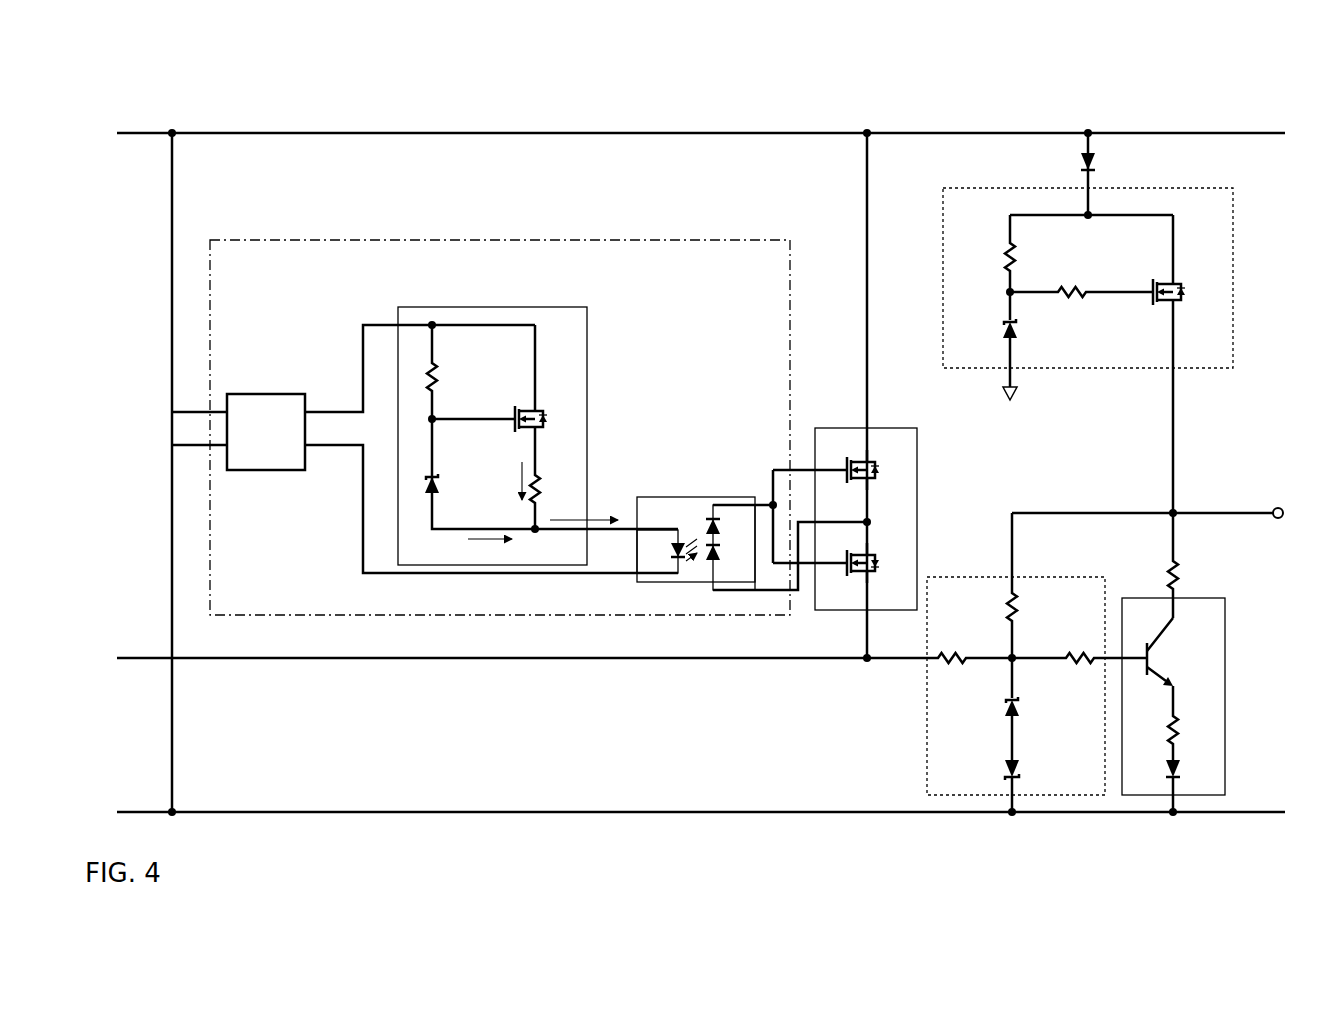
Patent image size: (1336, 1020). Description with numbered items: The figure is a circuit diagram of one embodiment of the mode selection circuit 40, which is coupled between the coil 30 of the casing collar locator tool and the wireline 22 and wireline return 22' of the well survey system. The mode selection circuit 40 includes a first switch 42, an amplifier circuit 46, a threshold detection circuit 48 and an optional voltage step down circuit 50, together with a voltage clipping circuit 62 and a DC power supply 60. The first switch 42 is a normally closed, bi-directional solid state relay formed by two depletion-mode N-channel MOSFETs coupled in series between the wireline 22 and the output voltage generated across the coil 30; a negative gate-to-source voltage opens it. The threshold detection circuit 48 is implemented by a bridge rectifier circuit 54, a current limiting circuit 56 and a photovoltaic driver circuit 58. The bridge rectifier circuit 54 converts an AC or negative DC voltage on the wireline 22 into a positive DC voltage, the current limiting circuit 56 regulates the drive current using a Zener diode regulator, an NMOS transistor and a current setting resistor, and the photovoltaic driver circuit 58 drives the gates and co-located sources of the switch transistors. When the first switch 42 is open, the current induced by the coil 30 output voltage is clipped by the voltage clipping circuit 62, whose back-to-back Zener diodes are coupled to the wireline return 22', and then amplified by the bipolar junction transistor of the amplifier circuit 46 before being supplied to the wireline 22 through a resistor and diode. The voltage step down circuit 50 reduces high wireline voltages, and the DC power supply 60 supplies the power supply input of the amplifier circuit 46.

The wireline 22 is at (685, 120).
The wireline return 22' is at (684, 797).
The coil 30 is at (150, 657).
The mode selection circuit 40 is at (943, 75).
The first switch 42 is at (885, 427).
The amplifier circuit 46 is at (1225, 688).
The threshold detection circuit 48 is at (672, 238).
The voltage step down circuit 50 is at (1183, 187).
The bridge rectifier circuit 54 is at (262, 393).
The current limiting circuit 56 is at (510, 307).
The photovoltaic driver circuit 58 is at (700, 496).
The DC power supply 60 is at (1272, 507).
The voltage clipping circuit 62 is at (1037, 576).